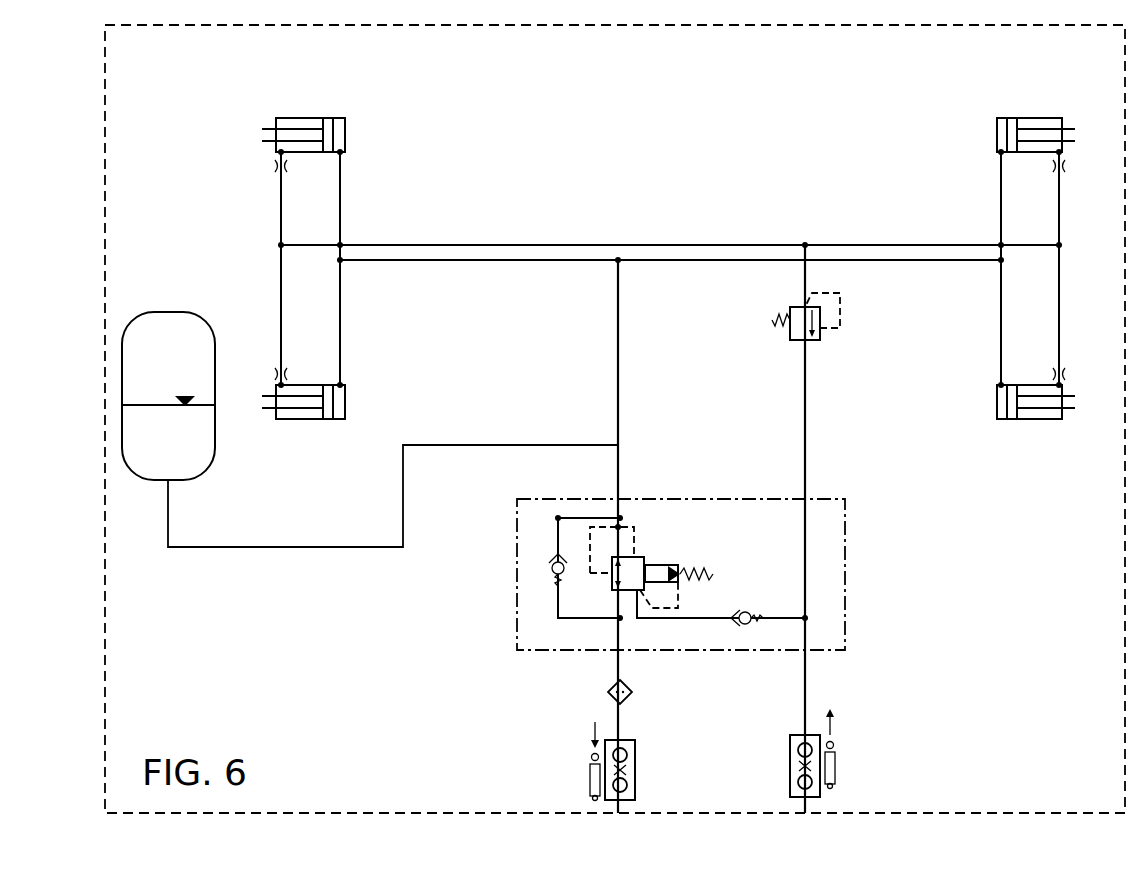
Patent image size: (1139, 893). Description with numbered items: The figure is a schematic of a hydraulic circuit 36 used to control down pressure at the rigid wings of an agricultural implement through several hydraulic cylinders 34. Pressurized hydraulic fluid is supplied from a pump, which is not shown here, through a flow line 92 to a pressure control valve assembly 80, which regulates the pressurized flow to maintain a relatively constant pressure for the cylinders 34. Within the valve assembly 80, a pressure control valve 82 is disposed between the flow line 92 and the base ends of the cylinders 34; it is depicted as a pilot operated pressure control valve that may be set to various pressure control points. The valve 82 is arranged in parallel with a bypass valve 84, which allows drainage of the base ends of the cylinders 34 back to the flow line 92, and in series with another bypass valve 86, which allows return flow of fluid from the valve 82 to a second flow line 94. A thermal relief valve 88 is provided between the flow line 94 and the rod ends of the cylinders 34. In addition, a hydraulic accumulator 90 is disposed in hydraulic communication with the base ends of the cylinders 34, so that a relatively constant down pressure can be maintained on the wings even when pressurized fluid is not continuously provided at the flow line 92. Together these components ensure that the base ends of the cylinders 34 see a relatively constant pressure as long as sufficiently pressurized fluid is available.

The cylinders 34 is at (316, 118).
The hydraulic system 36 is at (162, 111).
The pressure control valve assembly 80 is at (513, 548).
The pressure control valve 82 is at (640, 558).
The bypass valve 84 is at (555, 577).
The bypass valve 86 is at (750, 613).
The thermal relief valve 88 is at (812, 343).
The hydraulic accumulator 90 is at (138, 480).
The flow line 92 is at (610, 712).
The flow line 94 is at (810, 688).